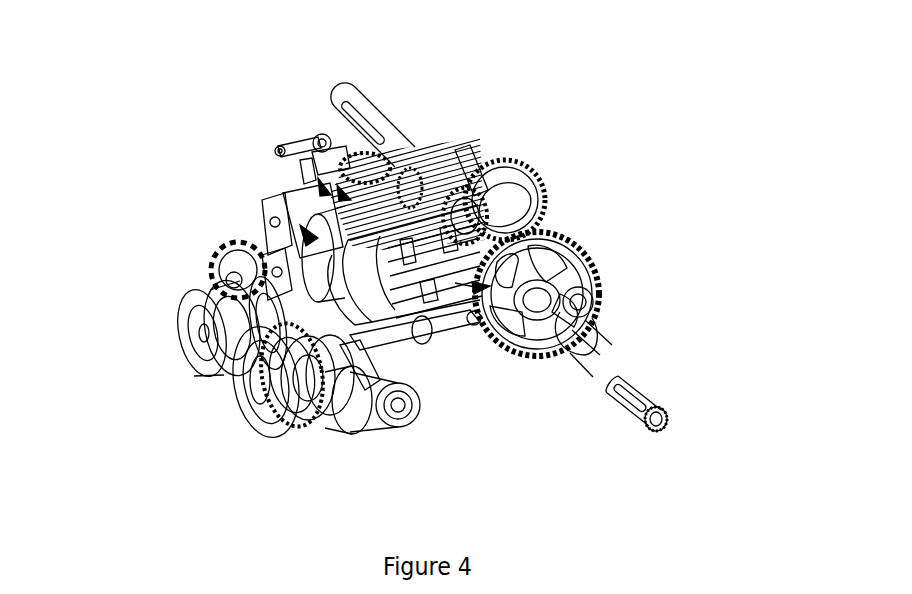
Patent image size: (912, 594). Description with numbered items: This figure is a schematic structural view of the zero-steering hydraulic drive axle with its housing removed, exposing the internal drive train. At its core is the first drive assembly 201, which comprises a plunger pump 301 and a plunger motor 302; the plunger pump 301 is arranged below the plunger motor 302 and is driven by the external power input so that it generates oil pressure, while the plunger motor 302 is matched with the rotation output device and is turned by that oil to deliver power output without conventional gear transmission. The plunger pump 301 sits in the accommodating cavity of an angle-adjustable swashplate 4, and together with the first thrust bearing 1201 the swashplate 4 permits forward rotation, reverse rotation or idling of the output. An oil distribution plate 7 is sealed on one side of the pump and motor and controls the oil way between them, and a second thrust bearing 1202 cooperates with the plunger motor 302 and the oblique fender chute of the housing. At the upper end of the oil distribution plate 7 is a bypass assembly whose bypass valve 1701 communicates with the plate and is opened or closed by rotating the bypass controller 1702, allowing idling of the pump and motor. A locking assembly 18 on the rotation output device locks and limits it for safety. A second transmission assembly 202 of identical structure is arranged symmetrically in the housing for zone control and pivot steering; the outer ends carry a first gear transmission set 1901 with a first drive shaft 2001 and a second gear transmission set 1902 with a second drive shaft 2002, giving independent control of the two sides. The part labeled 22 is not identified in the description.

The second drive shaft 2002 is at (375, 104).
The bypass controller 1702 is at (405, 178).
The bypass valve 1701 is at (480, 170).
The second gear transmission set 1902 is at (523, 178).
The locking assembly 18 is at (478, 231).
The oil distribution plate 7 is at (436, 286).
The first gear transmission set 1901 is at (598, 294).
The first drive shaft 2001 is at (616, 354).
The plunger pump 301 is at (432, 376).
The plunger motor 302 is at (340, 250).
The second transmission assembly 202 is at (222, 270).
The second thrust bearing 1202 is at (200, 317).
The bearing 22 is at (245, 362).
The swashplate 4 is at (300, 352).
The first thrust bearing 1201 is at (298, 372).
The first drive assembly 201 is at (336, 392).